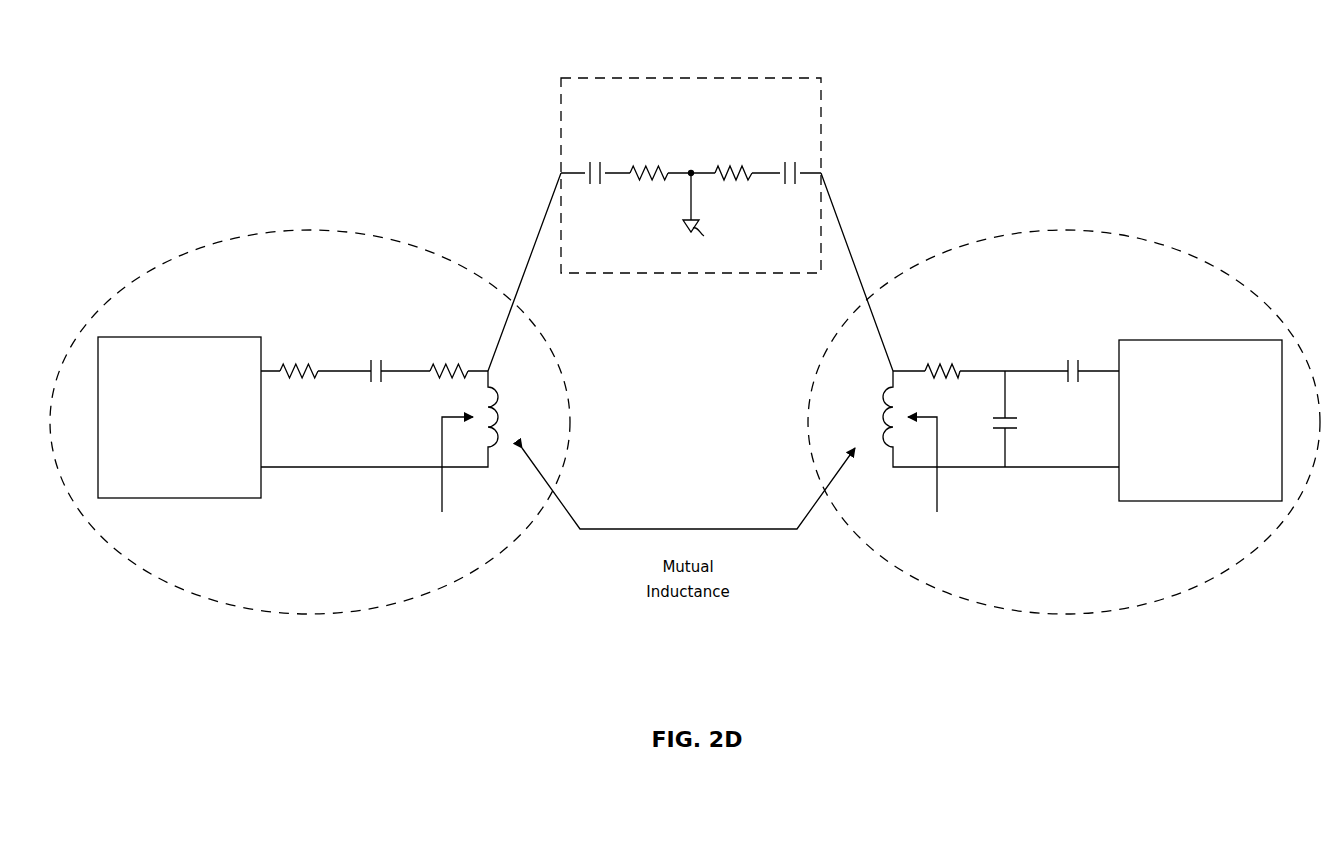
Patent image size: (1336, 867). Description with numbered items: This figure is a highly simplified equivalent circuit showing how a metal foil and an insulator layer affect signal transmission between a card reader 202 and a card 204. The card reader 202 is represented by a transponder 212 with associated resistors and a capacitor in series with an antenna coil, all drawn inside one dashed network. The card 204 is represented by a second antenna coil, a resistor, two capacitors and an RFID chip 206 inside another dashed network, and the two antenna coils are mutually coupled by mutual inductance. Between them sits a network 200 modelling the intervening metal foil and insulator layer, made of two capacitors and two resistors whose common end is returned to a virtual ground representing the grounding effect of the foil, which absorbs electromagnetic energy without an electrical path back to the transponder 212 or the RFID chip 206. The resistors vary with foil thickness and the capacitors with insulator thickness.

The network 200 is at (690, 78).
The card reader 202 is at (310, 382).
The card 204 is at (1064, 383).
The transponder 212 is at (172, 500).
The RFID chip 206 is at (1203, 502).